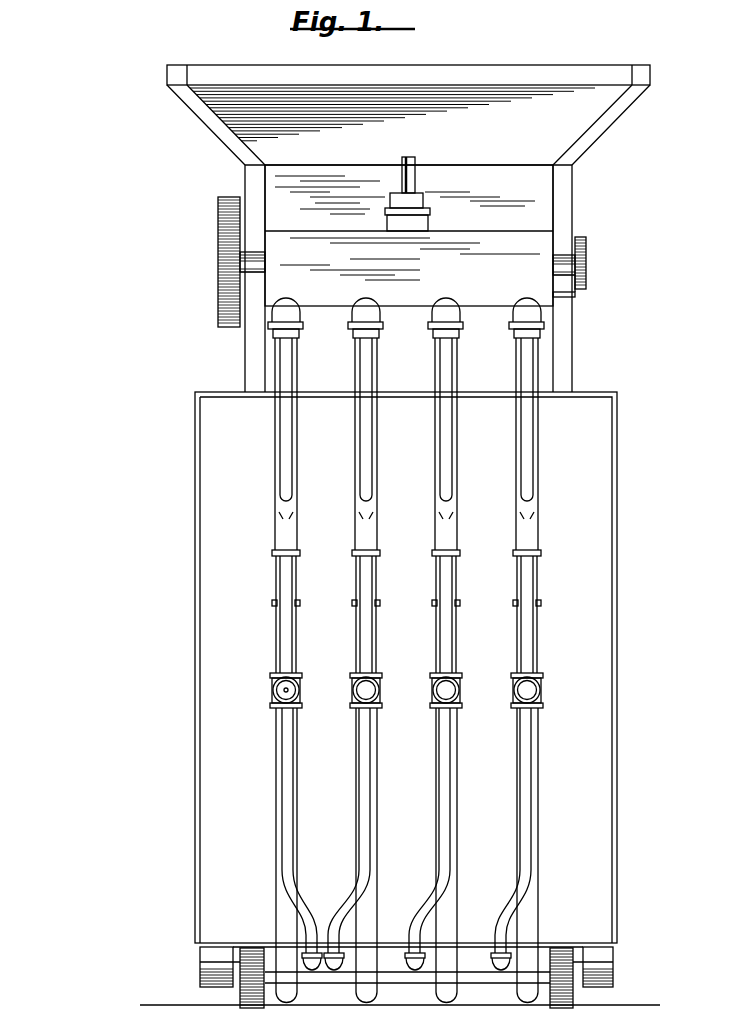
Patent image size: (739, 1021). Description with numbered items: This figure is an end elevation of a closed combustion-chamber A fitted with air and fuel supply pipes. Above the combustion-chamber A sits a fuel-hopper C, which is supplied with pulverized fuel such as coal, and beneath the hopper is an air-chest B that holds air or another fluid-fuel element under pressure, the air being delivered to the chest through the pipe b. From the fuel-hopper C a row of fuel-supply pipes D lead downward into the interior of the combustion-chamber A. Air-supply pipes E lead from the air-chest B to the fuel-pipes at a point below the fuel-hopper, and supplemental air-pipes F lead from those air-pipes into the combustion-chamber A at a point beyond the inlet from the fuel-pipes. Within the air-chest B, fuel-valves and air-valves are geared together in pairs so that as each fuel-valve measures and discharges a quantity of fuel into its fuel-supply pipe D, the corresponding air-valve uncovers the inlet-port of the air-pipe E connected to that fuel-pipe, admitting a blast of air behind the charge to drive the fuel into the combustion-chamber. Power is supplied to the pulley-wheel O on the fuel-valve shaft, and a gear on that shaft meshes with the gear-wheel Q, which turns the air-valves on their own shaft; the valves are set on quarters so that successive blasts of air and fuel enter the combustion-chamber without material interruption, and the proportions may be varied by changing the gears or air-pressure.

The combustion-chamber A is at (206, 613).
The air-chest B is at (409, 235).
The fuel-hopper C is at (470, 78).
The fuel-supply pipes D is at (297, 357).
The air-supply pipes E is at (283, 457).
The supplemental air-pipes F is at (291, 813).
The pulley-wheel O is at (226, 240).
The gear-wheel Q is at (584, 267).
The pipe b is at (409, 160).